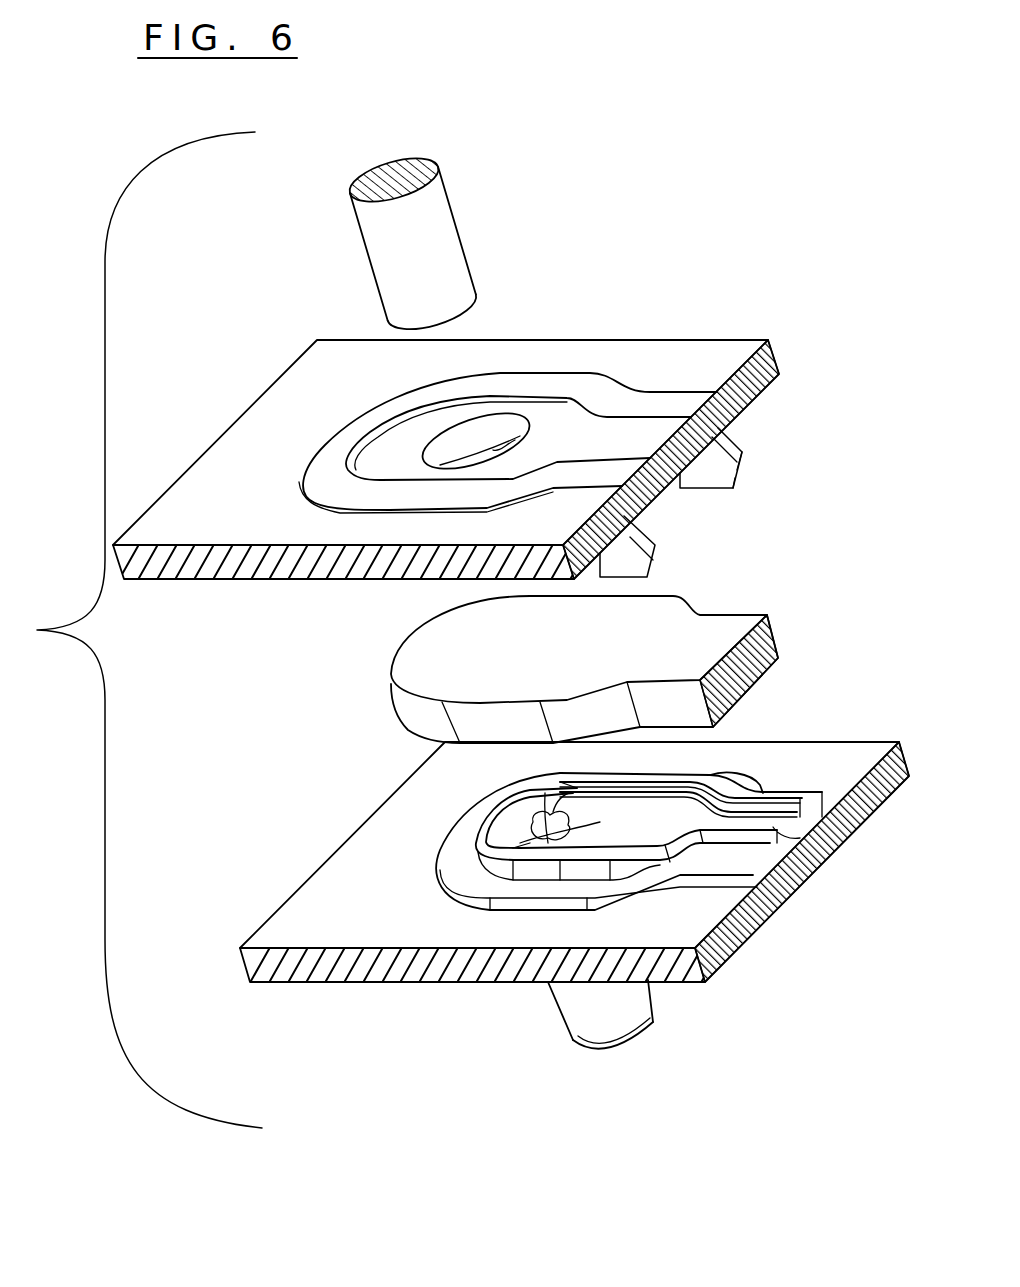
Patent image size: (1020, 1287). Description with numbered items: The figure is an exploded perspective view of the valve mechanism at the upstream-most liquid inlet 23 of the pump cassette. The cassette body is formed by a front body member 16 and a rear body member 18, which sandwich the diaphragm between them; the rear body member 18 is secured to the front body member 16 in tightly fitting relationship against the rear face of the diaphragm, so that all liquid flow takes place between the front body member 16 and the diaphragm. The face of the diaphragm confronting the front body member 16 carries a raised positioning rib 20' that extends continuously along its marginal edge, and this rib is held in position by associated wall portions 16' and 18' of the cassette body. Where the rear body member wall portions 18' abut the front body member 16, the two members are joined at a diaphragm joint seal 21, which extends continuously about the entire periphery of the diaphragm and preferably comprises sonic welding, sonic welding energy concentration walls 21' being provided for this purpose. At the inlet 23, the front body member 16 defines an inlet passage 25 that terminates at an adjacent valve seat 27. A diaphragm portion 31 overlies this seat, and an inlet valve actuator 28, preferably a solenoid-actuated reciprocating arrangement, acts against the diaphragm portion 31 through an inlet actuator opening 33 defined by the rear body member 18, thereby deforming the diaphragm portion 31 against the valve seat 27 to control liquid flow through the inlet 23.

The front body member 16 is at (574, 843).
The wall portions of the front body member 16' is at (758, 834).
The rear body member 18 is at (453, 429).
The rear body member wall portions 18' is at (703, 502).
The positioning rib 20' is at (780, 674).
The diaphragm joint seal 21 is at (581, 819).
The sonic welding energy concentration walls 21' is at (601, 583).
The upstream most liquid inlet 23 is at (635, 1017).
The inlet passage 25 is at (520, 798).
The valve seat 27 is at (550, 830).
The inlet valve actuator 28 is at (423, 255).
The diaphragm portion 31 is at (576, 653).
The inlet actuator opening 33 is at (493, 437).